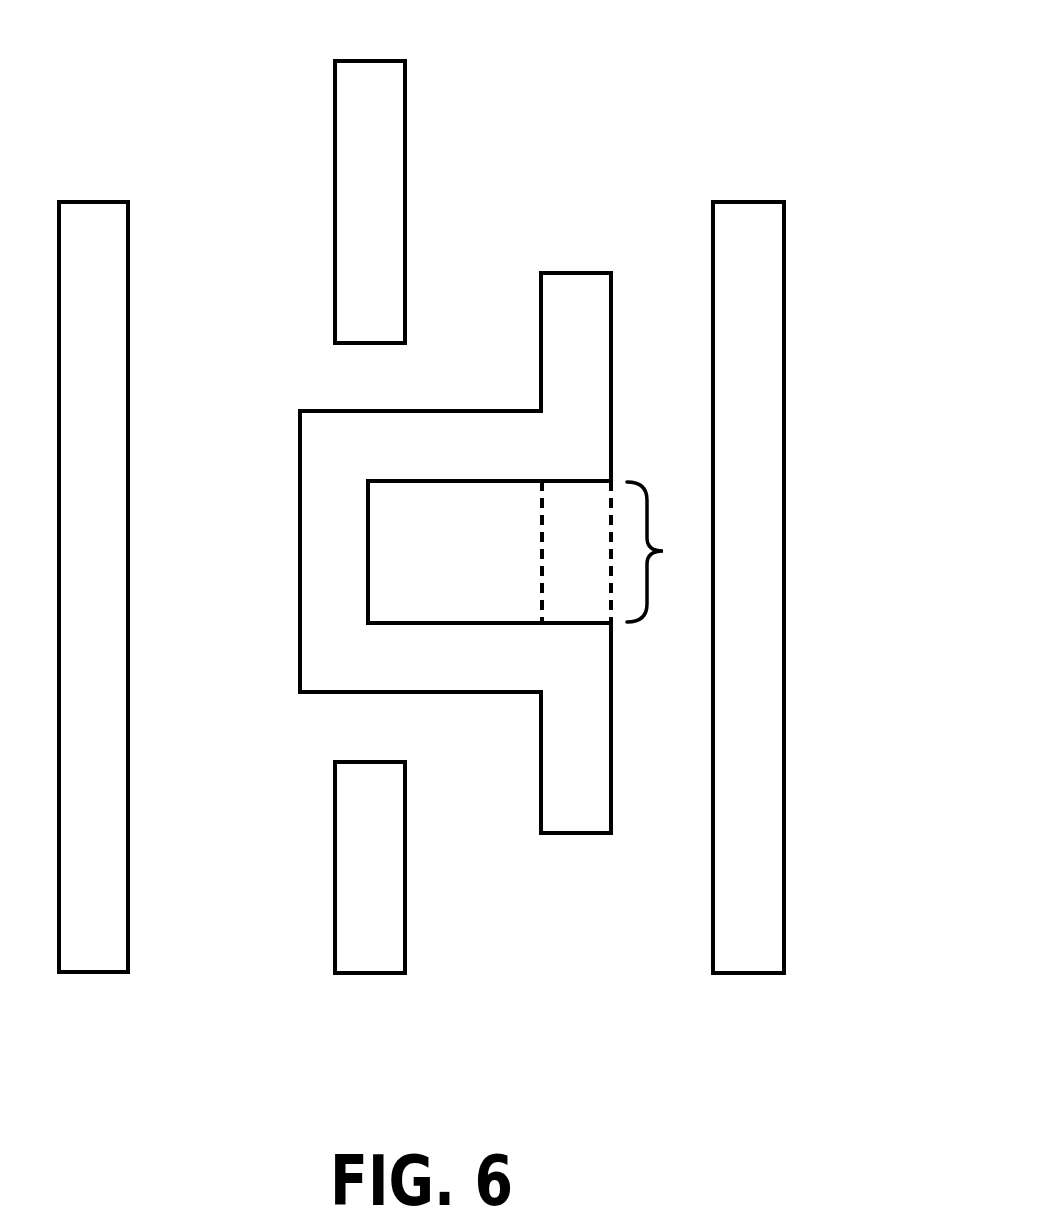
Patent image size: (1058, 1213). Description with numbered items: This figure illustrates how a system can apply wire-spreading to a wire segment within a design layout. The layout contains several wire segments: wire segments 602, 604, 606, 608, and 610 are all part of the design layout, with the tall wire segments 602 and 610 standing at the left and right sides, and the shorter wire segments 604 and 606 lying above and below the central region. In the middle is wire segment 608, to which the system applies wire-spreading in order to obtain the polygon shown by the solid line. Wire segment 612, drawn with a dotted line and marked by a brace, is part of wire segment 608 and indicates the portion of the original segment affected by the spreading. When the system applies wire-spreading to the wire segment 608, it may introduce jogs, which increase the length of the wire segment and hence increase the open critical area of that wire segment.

The wire segment 602 is at (93, 559).
The wire segment 604 is at (370, 174).
The wire segment 606 is at (370, 895).
The wire segment 608 is at (455, 525).
The wire segment 610 is at (748, 560).
The wire segment 612 is at (665, 517).